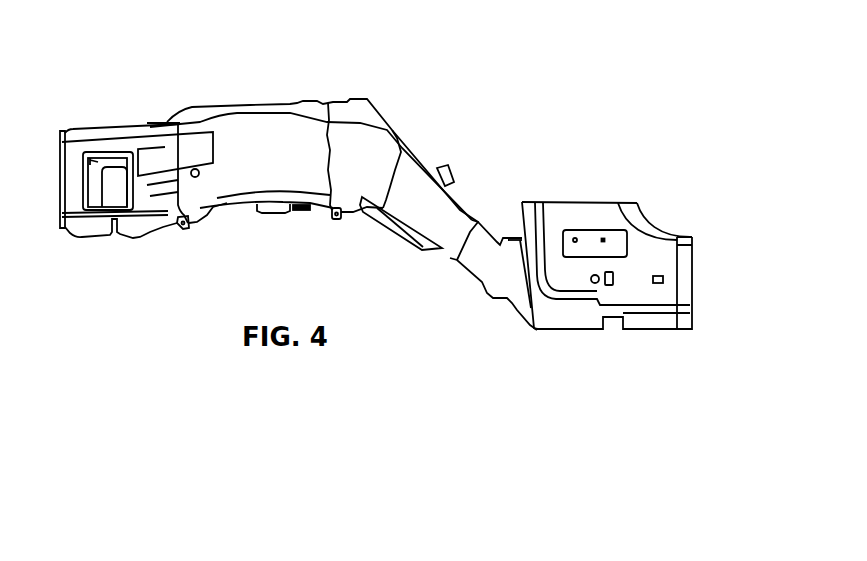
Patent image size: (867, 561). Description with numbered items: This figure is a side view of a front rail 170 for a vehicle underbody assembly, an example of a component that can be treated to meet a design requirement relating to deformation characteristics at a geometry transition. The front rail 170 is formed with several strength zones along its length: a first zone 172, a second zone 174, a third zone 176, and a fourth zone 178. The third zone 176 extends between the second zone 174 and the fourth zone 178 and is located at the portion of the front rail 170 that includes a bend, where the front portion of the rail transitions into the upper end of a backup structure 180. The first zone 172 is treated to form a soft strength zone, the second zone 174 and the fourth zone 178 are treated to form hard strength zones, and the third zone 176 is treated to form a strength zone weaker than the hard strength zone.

The front rail 170 is at (403, 68).
The first zone 172 is at (110, 125).
The second zone 174 is at (203, 215).
The third zone 176 is at (350, 210).
The fourth zone 178 is at (397, 237).
The backup structure 180 is at (512, 305).